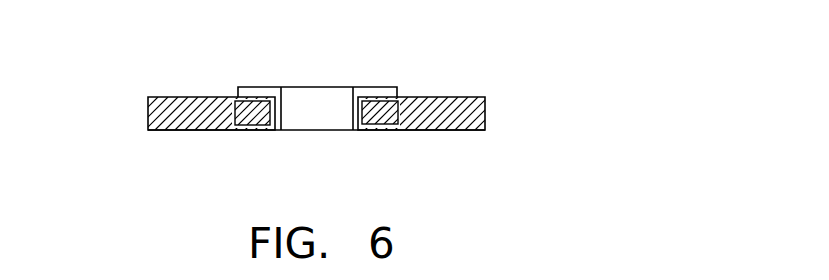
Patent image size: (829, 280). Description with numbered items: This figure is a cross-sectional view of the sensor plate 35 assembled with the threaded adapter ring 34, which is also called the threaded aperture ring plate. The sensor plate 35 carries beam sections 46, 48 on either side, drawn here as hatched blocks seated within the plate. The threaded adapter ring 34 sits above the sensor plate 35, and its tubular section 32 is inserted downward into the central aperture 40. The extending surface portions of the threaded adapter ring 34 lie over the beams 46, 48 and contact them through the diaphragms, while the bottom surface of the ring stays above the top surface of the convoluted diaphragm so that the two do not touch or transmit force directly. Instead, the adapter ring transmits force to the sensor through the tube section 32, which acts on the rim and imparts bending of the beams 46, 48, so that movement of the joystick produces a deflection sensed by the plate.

The tubular section 32 is at (336, 112).
The threaded adapter ring 34 is at (253, 85).
The sensor plate 35 is at (148, 112).
The aperture 40 is at (333, 93).
The beam section 46 is at (383, 118).
The beam section 48 is at (255, 122).